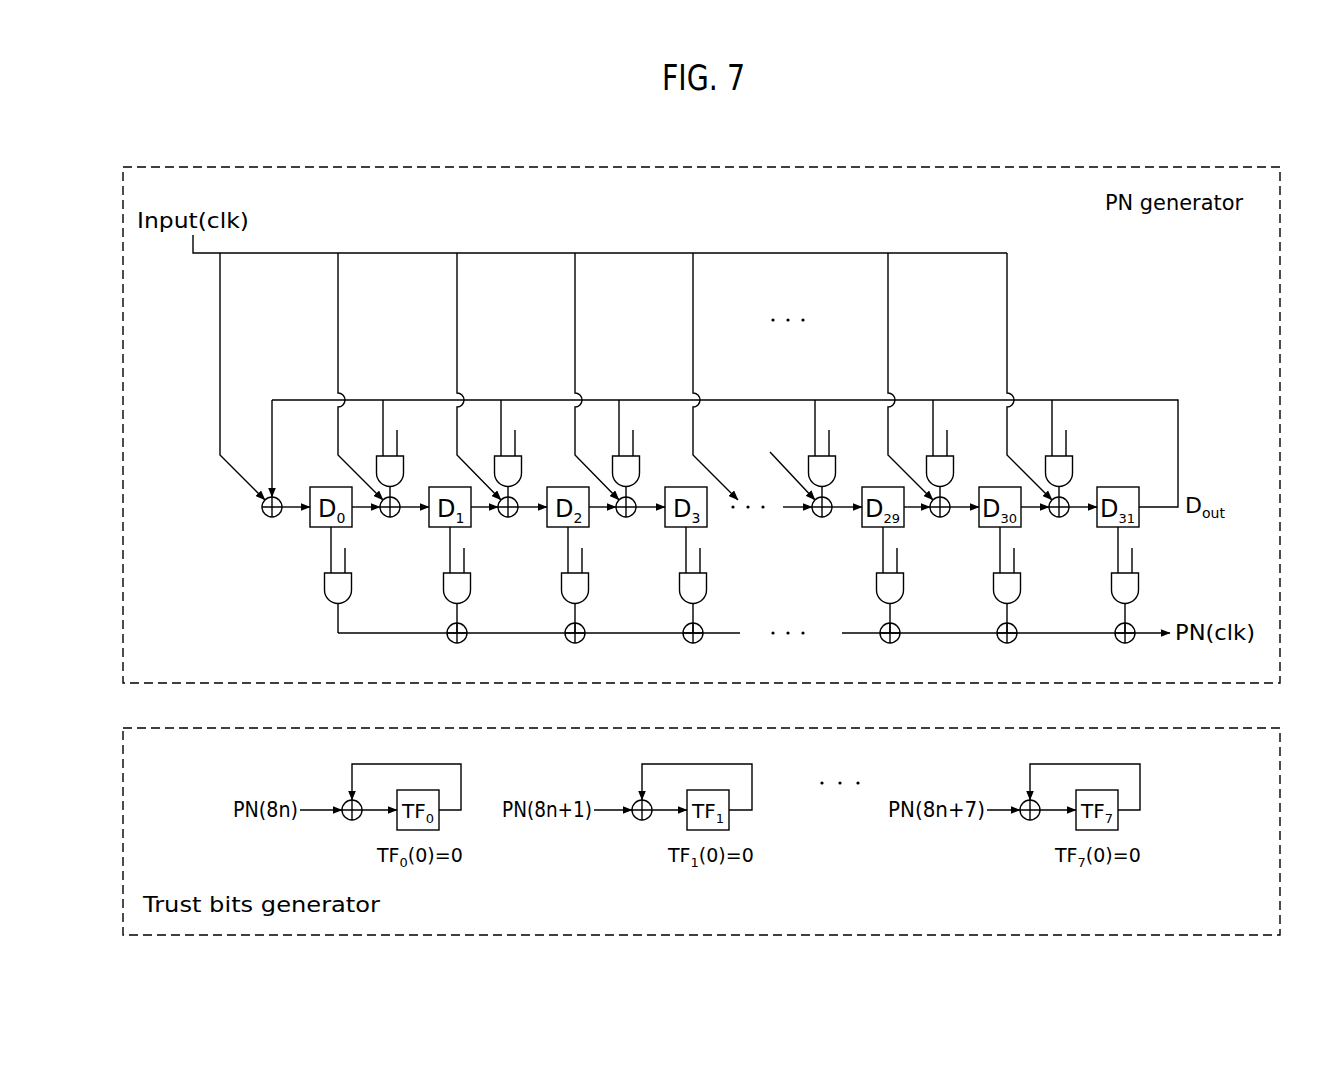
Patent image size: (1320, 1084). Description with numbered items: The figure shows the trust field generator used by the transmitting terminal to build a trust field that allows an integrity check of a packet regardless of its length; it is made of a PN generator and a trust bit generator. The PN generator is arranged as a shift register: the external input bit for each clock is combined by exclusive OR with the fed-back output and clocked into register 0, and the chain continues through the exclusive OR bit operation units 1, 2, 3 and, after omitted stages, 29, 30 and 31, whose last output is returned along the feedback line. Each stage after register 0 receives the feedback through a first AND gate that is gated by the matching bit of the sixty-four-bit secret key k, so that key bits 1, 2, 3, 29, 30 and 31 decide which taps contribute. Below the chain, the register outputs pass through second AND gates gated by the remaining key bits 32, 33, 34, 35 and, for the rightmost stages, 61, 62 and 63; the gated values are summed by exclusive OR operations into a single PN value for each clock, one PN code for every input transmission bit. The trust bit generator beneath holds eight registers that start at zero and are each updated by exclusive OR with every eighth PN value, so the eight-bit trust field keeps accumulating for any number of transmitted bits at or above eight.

The register 0 (exclusive OR bit operation unit D0) 0 is at (296, 458).
The exclusive OR bit operation unit D1 / secret key bit k1 1 is at (397, 430).
The exclusive OR bit operation unit D2 / secret key bit k2 2 is at (515, 430).
The exclusive OR bit operation unit D3 / secret key bit k3 3 is at (633, 430).
The exclusive OR bit operation unit D29 / secret key bit k29 29 is at (829, 430).
The exclusive OR bit operation unit D30 / secret key bit k30 30 is at (947, 430).
The exclusive OR bit operation unit D31 / secret key bit k31 31 is at (1066, 430).
The secret key bit k32 32 is at (345, 548).
The secret key bit k33 33 is at (464, 548).
The secret key bit k34 34 is at (582, 548).
The secret key bit k35 35 is at (700, 548).
The secret key bit k61 61 is at (897, 548).
The secret key bit k62 62 is at (1014, 548).
The secret key bit k63 63 is at (1132, 548).